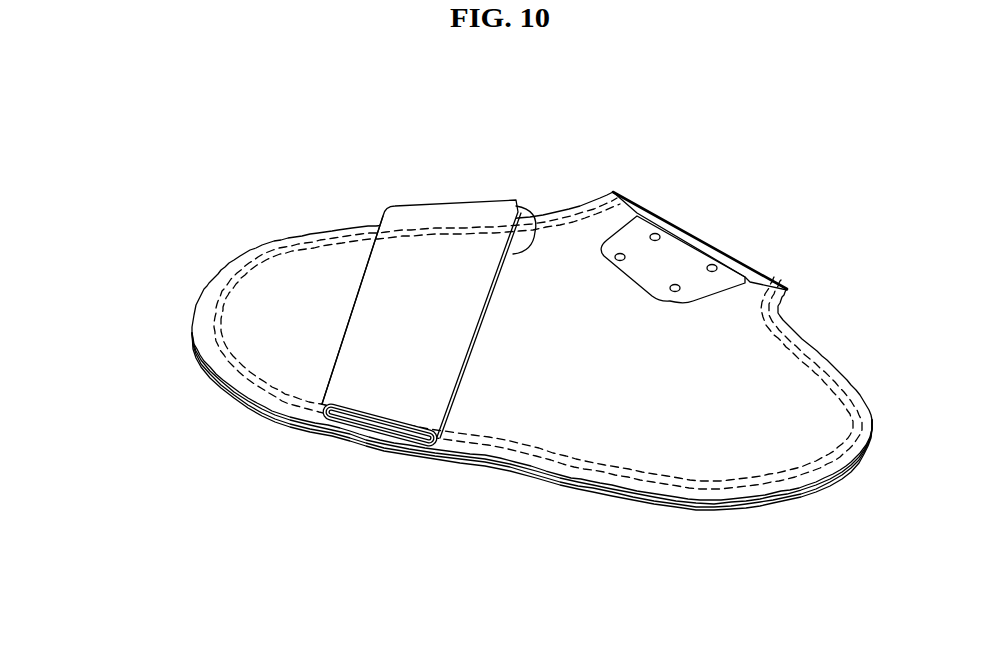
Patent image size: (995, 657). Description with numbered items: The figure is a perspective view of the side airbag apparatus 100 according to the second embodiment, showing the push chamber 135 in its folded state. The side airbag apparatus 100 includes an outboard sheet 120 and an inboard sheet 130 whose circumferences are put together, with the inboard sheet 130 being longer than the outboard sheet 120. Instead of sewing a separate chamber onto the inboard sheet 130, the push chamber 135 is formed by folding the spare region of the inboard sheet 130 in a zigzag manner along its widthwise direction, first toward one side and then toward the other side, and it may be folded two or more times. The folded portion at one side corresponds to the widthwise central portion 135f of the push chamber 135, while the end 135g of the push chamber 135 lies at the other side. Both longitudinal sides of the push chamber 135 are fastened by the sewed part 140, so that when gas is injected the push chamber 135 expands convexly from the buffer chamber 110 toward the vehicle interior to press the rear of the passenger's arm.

The side airbag apparatus 100 is at (499, 330).
The buffer chamber 110 is at (499, 351).
The outboard sheet 120 is at (273, 418).
The inboard sheet 130 is at (273, 370).
The push chamber 135 is at (456, 285).
The widthwise central portion 135f is at (358, 298).
The end of the push chamber 135g is at (517, 254).
The sewed part 140 is at (657, 480).